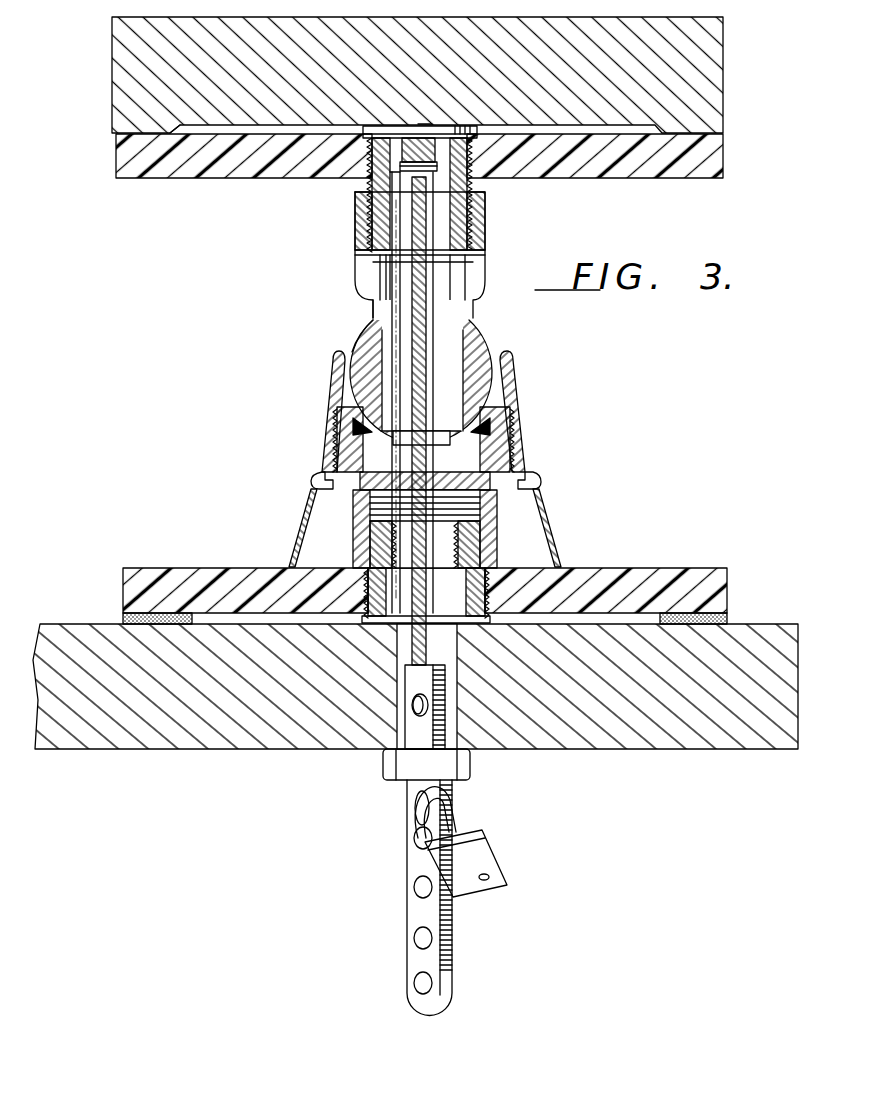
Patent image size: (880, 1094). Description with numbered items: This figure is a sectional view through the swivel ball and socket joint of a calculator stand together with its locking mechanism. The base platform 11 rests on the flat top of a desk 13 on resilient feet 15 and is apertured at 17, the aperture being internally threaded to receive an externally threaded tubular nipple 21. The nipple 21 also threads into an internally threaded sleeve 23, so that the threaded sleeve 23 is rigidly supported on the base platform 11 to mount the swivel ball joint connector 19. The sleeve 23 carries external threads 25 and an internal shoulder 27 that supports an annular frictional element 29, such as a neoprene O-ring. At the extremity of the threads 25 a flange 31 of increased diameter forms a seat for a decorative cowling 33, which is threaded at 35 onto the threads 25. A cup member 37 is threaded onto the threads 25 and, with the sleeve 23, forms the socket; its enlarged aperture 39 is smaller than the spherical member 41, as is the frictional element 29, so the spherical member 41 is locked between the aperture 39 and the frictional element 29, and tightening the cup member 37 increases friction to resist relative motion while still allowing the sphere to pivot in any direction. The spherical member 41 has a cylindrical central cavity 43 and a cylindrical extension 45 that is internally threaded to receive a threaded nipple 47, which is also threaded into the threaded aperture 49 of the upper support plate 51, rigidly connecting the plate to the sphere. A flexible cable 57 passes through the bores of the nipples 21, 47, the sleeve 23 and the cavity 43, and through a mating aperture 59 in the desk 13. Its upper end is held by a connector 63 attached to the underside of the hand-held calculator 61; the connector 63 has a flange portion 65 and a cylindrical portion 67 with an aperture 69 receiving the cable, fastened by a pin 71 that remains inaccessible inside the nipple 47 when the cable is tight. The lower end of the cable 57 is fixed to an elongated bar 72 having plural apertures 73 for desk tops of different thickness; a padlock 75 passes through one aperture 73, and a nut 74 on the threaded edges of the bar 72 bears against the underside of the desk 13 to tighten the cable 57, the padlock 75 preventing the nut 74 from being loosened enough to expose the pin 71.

The base platform 11 is at (665, 575).
The desk 13 is at (614, 742).
The resilient feet 15 is at (124, 612).
The aperture 17 is at (456, 590).
The swivel ball joint connector 19 is at (280, 291).
The threaded nipple 21 is at (365, 544).
The threaded sleeve 23 is at (348, 450).
The external threads 25 is at (512, 452).
The internal shoulder 27 is at (355, 421).
The annular frictional element 29 is at (492, 416).
The flange 31 is at (533, 486).
The decorative cowling 33 is at (550, 530).
The cowling threads 35 is at (313, 486).
The cup member 37 is at (333, 394).
The enlarged aperture 39 is at (352, 352).
The spherical member 41 is at (492, 345).
The cylindrical central cavity 43 is at (388, 328).
The cylindrical extension 45 is at (478, 238).
The threaded nipple 47 is at (375, 238).
The aperture 49 is at (395, 129).
The upper support plate 51 is at (690, 172).
The flexible cable 57 is at (470, 316).
The mating aperture 59 is at (452, 700).
The hand-held calculator 61 is at (705, 68).
The connector 63 is at (428, 108).
The flange portion 65 is at (475, 126).
The cylindrical portion 67 is at (470, 165).
The aperture 69 is at (468, 180).
The pin 71 is at (393, 180).
The elongated bar 72 is at (413, 822).
The apertures 73 is at (408, 925).
The nut 74 is at (392, 764).
The padlock 75 is at (492, 862).